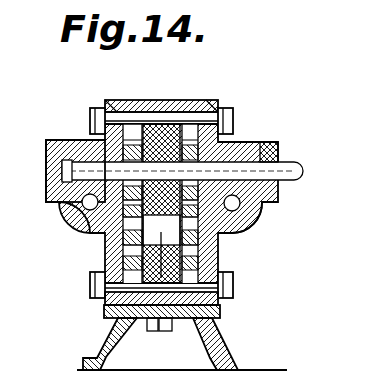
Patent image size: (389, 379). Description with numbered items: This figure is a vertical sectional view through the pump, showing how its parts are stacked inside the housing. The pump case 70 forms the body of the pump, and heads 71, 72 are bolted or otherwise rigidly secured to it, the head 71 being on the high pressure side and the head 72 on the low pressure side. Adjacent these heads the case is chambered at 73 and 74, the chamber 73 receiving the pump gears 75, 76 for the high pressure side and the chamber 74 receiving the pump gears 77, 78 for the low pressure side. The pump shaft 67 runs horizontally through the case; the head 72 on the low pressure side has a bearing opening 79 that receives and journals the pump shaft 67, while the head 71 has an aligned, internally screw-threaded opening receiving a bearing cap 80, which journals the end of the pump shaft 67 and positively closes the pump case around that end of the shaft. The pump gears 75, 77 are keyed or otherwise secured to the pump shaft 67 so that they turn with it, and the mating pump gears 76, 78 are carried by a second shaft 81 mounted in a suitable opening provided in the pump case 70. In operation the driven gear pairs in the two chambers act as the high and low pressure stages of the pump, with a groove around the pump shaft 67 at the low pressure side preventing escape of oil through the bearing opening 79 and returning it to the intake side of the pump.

The pump shaft 67 is at (302, 171).
The pump case 70 is at (148, 100).
The head 71 is at (95, 262).
The head 72 is at (223, 261).
The chamber 73 is at (100, 306).
The chamber 74 is at (200, 304).
The pump gear 75 is at (78, 223).
The pump gear 76 is at (100, 236).
The pump gear 77 is at (245, 233).
The pump gear 78 is at (222, 251).
The bearing opening 79 is at (236, 144).
The bearing cap 80 is at (60, 167).
The shaft 81 is at (266, 149).